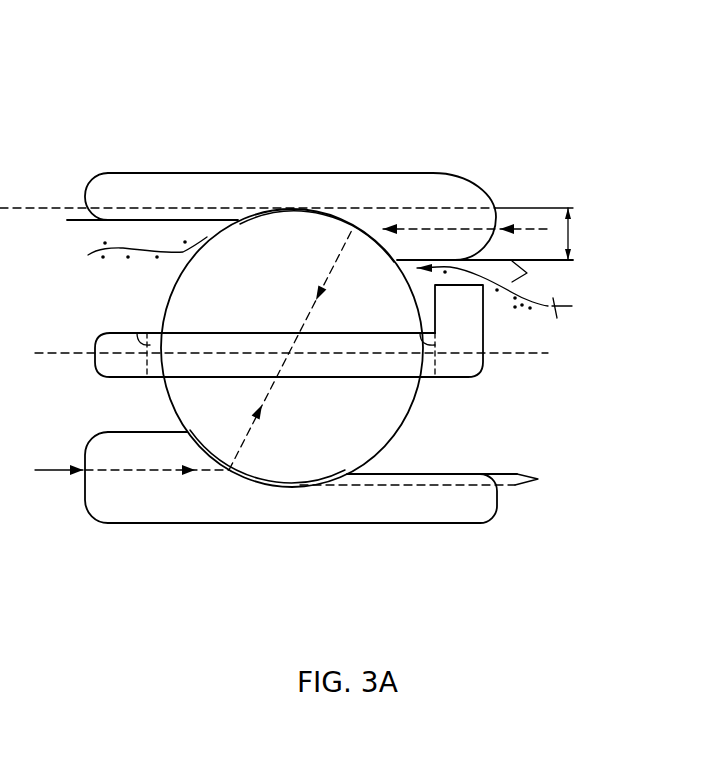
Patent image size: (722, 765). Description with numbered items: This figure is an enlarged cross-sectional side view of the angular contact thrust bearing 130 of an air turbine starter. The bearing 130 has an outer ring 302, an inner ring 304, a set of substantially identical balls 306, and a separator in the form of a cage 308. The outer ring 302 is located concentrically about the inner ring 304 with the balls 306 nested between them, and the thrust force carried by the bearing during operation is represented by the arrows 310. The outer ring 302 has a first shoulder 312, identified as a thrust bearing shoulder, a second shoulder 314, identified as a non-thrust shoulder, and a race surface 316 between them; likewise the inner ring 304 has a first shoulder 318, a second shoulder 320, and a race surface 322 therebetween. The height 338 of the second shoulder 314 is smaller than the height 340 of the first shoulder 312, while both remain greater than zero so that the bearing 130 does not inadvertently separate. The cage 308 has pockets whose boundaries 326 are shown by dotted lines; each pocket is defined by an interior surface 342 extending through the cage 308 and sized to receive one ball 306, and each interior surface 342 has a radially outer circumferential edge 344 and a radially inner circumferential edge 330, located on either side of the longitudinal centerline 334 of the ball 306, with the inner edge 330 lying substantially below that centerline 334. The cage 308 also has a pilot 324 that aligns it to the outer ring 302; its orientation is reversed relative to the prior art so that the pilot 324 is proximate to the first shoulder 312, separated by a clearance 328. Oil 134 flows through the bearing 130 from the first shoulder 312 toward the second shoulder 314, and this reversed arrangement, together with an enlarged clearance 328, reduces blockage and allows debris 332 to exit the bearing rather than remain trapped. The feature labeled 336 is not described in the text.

The angular contact thrust bearing 130 is at (496, 104).
The oil 134 is at (88, 255).
The outer ring 302 is at (146, 213).
The inner ring 304 is at (426, 515).
The ball 306 is at (237, 300).
The cage 308 is at (95, 360).
The thrust force arrows 310 is at (293, 359).
The first shoulder of the outer ring 312 is at (457, 260).
The second shoulder of the outer ring 314 is at (168, 220).
The race surface of the outer ring 316 is at (250, 220).
The first shoulder of the inner ring 318 is at (145, 432).
The second shoulder of the inner ring 320 is at (447, 474).
The race surface of the inner ring 322 is at (297, 524).
The pilot 324 is at (463, 285).
The pocket boundaries 326 is at (137, 333).
The clearance 328 is at (527, 273).
The radially inner circumferential edge 330 is at (373, 377).
The debris 332 is at (520, 310).
The longitudinal centerline 334 is at (67, 355).
The opening 336 is at (147, 377).
The height of the second shoulder 338 is at (67, 208).
The height of the first shoulder 340 is at (572, 229).
The interior surface 342 is at (148, 362).
The radially outer circumferential edge 344 is at (227, 333).